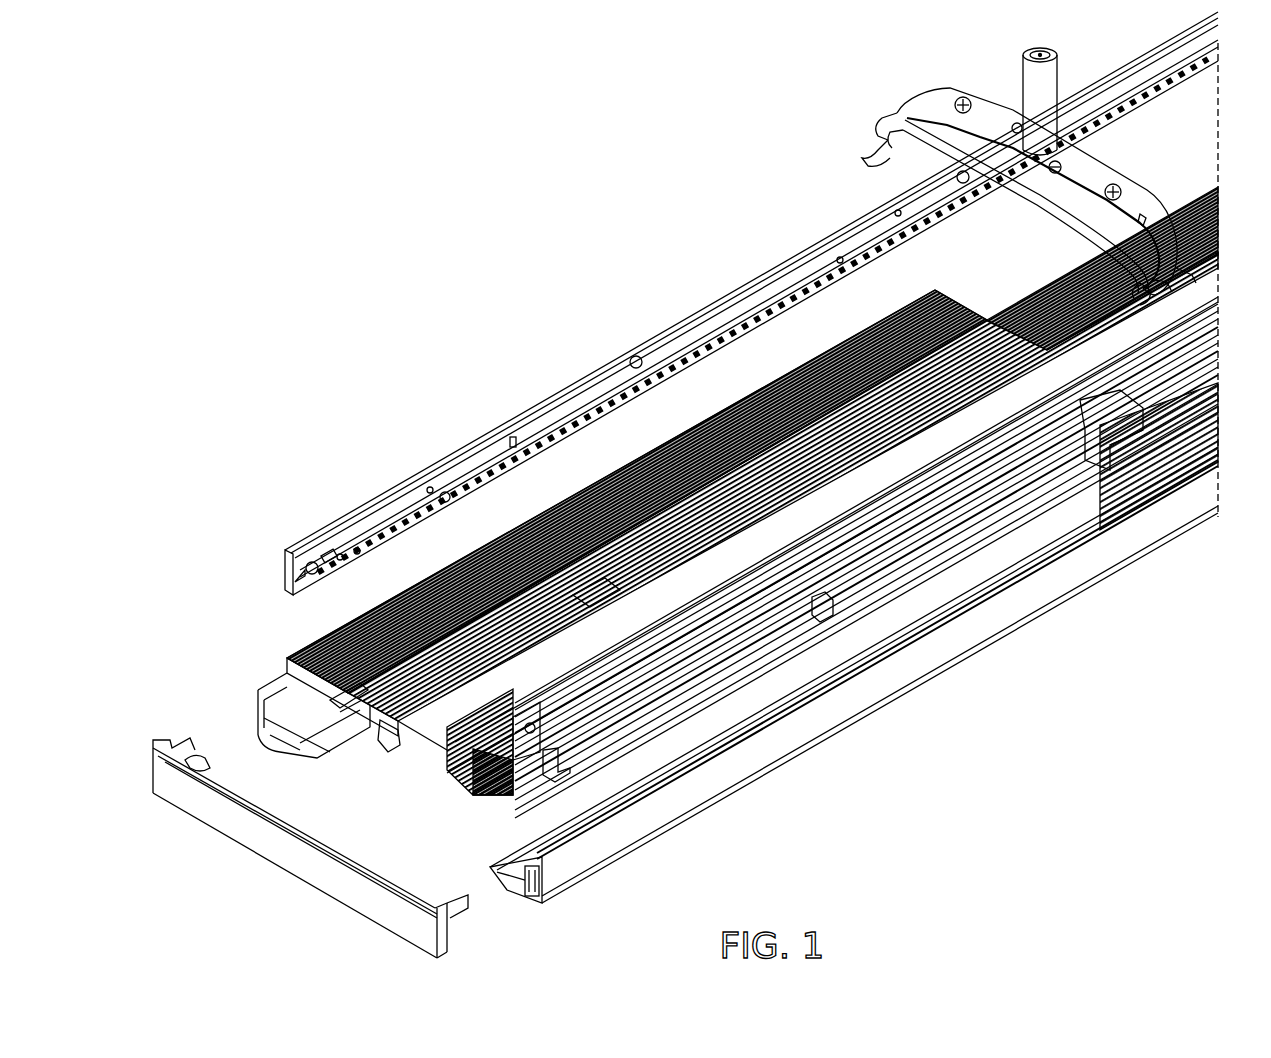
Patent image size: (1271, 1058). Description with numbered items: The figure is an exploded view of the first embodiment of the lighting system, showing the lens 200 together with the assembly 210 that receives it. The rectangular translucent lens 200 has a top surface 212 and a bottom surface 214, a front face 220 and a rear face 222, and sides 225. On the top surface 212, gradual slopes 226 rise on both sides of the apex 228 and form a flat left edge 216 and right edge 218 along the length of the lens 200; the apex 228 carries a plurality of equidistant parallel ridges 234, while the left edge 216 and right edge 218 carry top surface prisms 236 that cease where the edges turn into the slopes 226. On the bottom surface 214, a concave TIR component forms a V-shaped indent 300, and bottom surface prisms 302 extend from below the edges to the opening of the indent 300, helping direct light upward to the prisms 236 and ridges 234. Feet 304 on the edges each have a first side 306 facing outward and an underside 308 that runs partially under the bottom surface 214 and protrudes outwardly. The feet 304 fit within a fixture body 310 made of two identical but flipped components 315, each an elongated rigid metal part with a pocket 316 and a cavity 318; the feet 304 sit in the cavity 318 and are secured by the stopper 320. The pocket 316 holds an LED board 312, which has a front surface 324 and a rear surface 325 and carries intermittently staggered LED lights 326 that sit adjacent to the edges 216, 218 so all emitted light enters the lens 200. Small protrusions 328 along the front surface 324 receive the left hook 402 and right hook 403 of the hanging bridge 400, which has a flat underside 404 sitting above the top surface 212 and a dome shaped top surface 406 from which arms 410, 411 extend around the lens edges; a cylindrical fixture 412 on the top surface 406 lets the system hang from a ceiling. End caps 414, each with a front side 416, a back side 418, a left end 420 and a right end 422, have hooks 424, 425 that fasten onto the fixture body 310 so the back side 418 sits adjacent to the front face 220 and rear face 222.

The lens 200 is at (282, 652).
The assembly 210 is at (242, 548).
The top surface 212 is at (492, 628).
The bottom surface 214 is at (360, 714).
The left edge 216 is at (405, 612).
The right edge 218 is at (503, 762).
The front face 220 is at (462, 745).
The rear face 222 is at (935, 292).
The sides 225 is at (628, 462).
The gradual slopes 226 is at (403, 685).
The apex 228 is at (537, 587).
The ridges 234 is at (592, 590).
The top surface prisms 236 is at (348, 632).
The V-shaped indent 300 is at (393, 735).
The bottom surface prisms 302 is at (455, 768).
The feet 304 is at (886, 598).
The first side 306 is at (814, 618).
The underside 308 is at (830, 607).
The fixture body 310 is at (874, 738).
The LED board 312 is at (418, 455).
The components 315 is at (790, 746).
The pocket 316 is at (505, 887).
The cavity 318 is at (272, 740).
The stopper 320 is at (320, 760).
The front surface 324 is at (598, 395).
The rear surface 325 is at (617, 672).
The LED lights 326 is at (320, 558).
The protrusions 328 is at (635, 356).
The hanging bridge 400 is at (1066, 86).
The left hook 402 is at (866, 152).
The right hook 403 is at (1178, 296).
The flat underside 404 is at (1040, 198).
The dome shaped top surface 406 is at (1085, 158).
The arm 410 is at (876, 122).
The arm 411 is at (1193, 278).
The cylindrical fixture 412 is at (1022, 85).
The end cap 414 is at (205, 906).
The front side 416 is at (323, 873).
The back side 418 is at (380, 872).
The left end 420 is at (175, 746).
The right end 422 is at (463, 915).
The hook 424 is at (213, 766).
The hook 425 is at (448, 902).